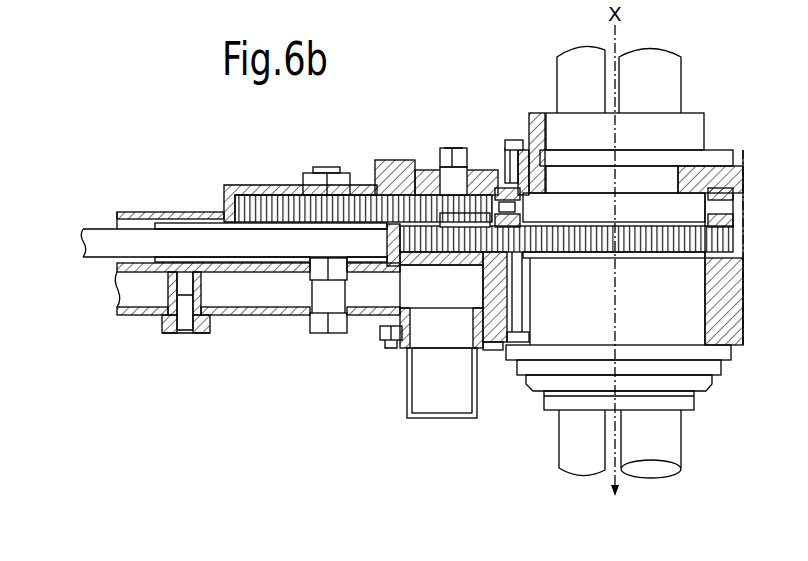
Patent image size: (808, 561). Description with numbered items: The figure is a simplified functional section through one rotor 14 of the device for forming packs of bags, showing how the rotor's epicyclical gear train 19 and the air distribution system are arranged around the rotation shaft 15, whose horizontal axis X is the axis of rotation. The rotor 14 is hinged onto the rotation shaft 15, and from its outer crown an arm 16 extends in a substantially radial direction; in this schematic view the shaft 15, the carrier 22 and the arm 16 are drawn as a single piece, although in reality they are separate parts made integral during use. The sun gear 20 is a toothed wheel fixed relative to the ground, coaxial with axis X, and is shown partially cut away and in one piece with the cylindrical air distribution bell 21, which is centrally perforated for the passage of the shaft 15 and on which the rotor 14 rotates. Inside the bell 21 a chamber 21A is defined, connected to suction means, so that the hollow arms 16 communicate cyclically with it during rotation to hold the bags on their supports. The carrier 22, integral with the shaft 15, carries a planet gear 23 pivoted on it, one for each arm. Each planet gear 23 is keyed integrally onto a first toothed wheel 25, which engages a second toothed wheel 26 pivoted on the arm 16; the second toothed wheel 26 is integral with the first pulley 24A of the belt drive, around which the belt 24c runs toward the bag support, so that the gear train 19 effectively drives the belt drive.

The rotor 14 is at (514, 383).
The rotation shaft 15 is at (668, 432).
The arm 16 is at (147, 311).
The epicyclical gear train 19 is at (505, 134).
The sun gear 20 is at (720, 240).
The cylindrical air distribution bell 21 is at (492, 300).
The chamber 21A is at (415, 290).
The carrier 22 is at (470, 187).
The planet gear 23 is at (468, 242).
The first pulley 24A is at (286, 260).
The belt 24c is at (97, 247).
The first toothed wheel 25 is at (437, 194).
The second toothed wheel 26 is at (267, 208).